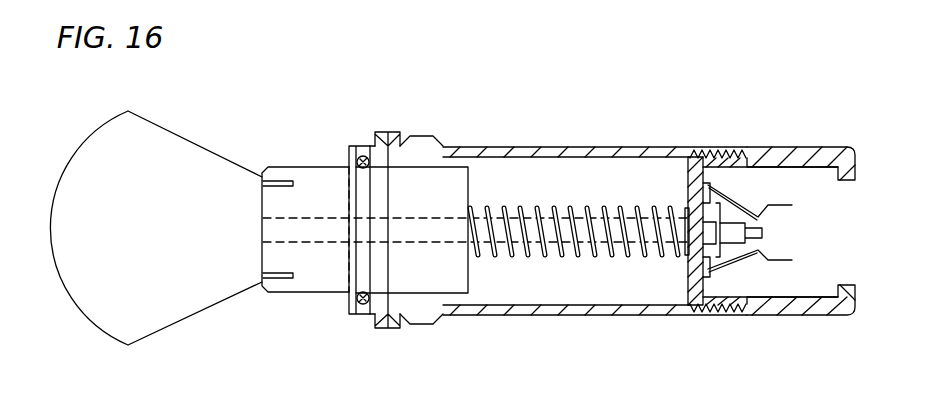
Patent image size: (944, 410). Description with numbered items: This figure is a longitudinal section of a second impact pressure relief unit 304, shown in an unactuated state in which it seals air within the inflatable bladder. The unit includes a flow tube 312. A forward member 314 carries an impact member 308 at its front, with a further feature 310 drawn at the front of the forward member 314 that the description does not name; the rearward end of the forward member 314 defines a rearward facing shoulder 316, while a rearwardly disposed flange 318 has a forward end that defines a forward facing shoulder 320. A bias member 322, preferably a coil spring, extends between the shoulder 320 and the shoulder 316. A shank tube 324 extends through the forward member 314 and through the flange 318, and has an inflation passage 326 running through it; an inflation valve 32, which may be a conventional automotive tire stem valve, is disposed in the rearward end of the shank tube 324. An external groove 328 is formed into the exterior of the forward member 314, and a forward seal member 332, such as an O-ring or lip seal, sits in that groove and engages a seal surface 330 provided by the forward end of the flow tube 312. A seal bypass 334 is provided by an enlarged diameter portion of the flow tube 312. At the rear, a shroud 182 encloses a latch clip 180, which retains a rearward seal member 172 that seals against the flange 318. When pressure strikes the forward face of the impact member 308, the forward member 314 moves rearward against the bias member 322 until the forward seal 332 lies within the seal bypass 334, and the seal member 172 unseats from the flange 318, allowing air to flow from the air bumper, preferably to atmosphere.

The second impact pressure relief unit 304 is at (191, 209).
The impact member 308 is at (75, 148).
The bulb base slot 310 is at (283, 170).
The forward member 314 is at (317, 280).
The external groove 328 is at (350, 169).
The forward seal member 332 is at (358, 158).
The seal surface 330 is at (380, 327).
The seal bypass 334 is at (418, 323).
The flow tube 312 is at (577, 150).
The rearward facing shoulder 316 is at (470, 257).
The shank tube 324 is at (512, 217).
The inflation passage 326 is at (476, 259).
The bias member 322 is at (530, 253).
The forward facing shoulder 320 is at (690, 282).
The flange 318 is at (705, 178).
The shroud 182 is at (850, 162).
The latch clip 180 is at (748, 210).
The rearward seal member 172 is at (715, 263).
The inflation valve 32 is at (763, 228).